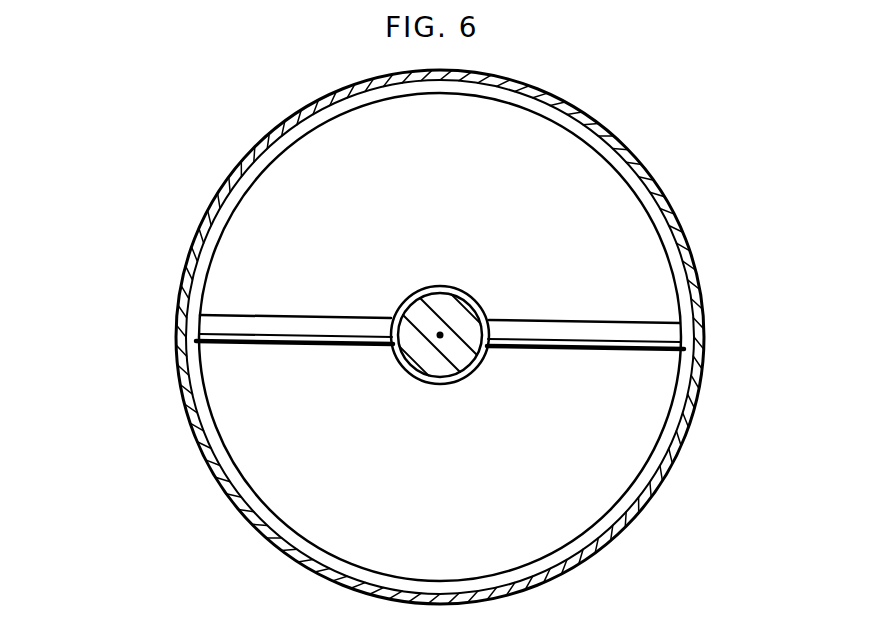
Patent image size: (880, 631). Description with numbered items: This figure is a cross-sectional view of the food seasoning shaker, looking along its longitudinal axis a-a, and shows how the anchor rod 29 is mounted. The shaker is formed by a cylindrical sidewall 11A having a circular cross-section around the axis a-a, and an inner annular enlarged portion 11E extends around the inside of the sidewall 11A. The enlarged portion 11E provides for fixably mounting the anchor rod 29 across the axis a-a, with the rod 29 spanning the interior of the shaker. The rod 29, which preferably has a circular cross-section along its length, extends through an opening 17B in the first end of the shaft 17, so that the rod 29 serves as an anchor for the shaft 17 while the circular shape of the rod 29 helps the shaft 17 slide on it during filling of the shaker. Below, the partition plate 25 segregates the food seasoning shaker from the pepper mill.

The sidewall 11A is at (623, 150).
The inner annular enlarged portion 11E is at (577, 122).
The shaft 17 is at (462, 358).
The opening 17B is at (417, 291).
The anchor rod 29 is at (595, 332).
The partition plate 25 is at (245, 431).
The longitudinal axis a-a is at (440, 335).